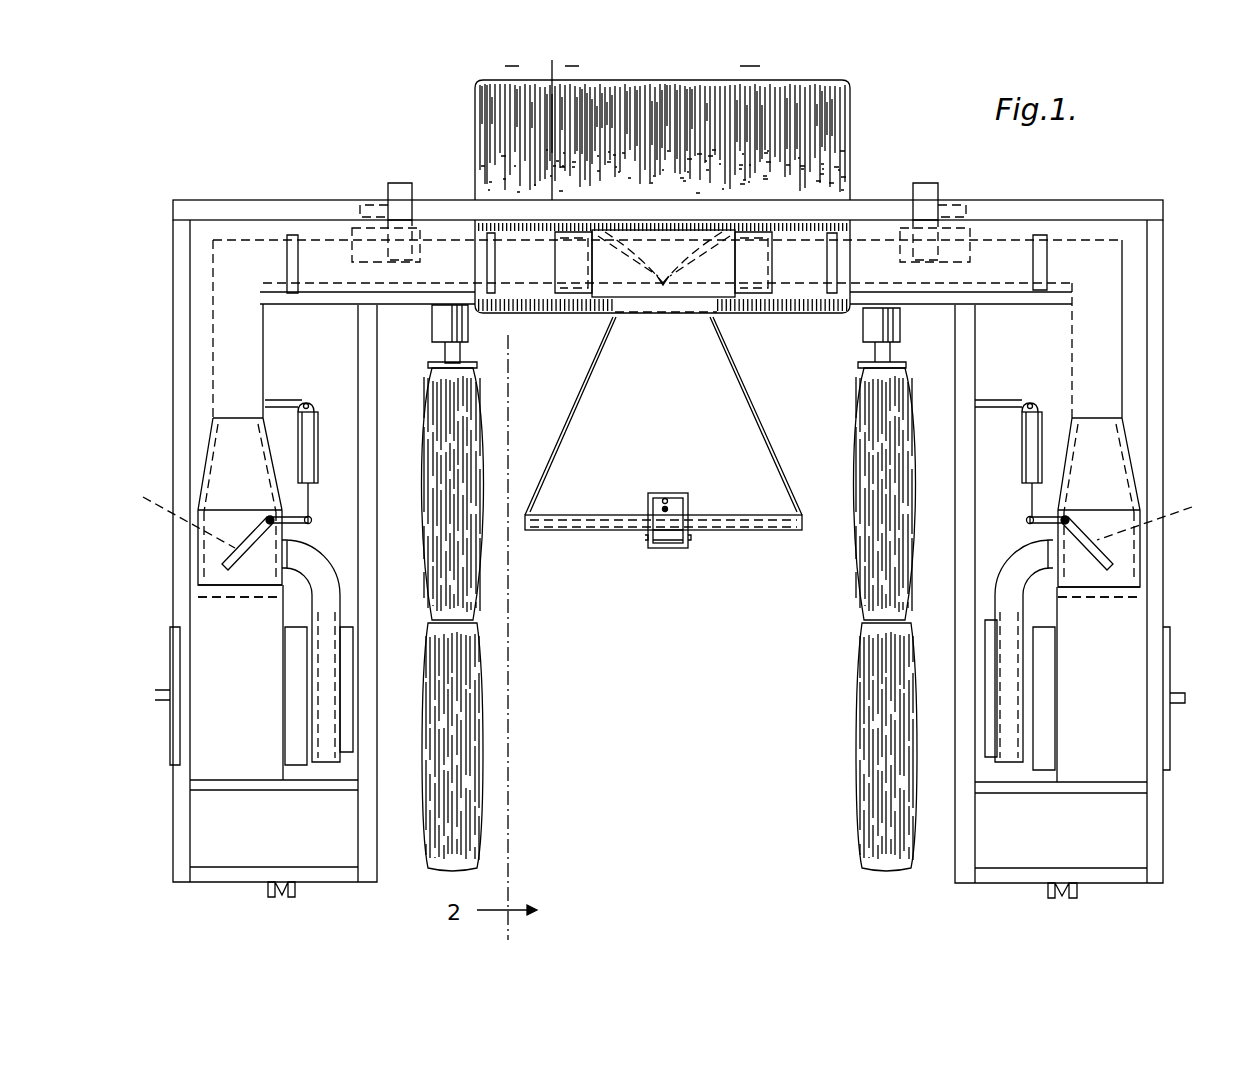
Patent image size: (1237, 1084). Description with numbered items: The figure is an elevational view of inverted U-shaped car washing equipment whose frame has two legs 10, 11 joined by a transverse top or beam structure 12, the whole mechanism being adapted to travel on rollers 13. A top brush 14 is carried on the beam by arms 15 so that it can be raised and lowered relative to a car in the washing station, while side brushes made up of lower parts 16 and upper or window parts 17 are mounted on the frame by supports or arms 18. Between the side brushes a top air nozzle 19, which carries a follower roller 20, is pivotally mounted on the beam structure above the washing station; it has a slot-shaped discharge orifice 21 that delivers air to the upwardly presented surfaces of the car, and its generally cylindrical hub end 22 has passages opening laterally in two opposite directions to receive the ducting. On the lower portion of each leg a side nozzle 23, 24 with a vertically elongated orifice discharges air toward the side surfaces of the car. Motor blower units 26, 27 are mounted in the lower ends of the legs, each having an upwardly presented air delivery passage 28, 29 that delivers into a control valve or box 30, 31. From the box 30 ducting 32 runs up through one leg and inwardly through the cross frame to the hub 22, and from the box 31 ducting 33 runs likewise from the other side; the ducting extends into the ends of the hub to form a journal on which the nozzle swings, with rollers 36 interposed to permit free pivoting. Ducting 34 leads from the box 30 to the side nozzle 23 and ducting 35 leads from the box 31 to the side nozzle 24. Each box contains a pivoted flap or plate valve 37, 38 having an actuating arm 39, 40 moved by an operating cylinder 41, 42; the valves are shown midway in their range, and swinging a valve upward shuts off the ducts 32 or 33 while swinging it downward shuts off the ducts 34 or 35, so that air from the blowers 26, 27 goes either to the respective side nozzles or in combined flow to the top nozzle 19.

The leg 10 is at (167, 401).
The leg 11 is at (1169, 461).
The beam structure 12 is at (261, 196).
The rollers 13 is at (283, 897).
The top brush 14 is at (825, 135).
The arms 15 is at (400, 183).
The lower parts of side brushes 16 is at (458, 710).
The upper or window parts of side brushes 17 is at (430, 420).
The supports or arms 18 is at (418, 303).
The top air nozzle 19 is at (595, 385).
The follower roller 20 is at (680, 548).
The discharge orifice 21 is at (568, 528).
The hub end 22 is at (715, 290).
The side nozzle 23 is at (353, 656).
The side nozzle 24 is at (985, 676).
The motor blower unit 26 is at (220, 707).
The motor blower unit 27 is at (1120, 667).
The air delivery passage 28 is at (215, 588).
The air delivery passage 29 is at (1130, 588).
The control valve or box 30 is at (210, 547).
The control valve or box 31 is at (1125, 548).
The ducting 32 is at (225, 313).
The ducting 33 is at (1105, 345).
The ducting 34 is at (315, 565).
The ducting 35 is at (1015, 565).
The rollers 36 is at (600, 236).
The flap or plate valve 37 is at (171, 517).
The flap or plate valve 38 is at (1158, 518).
The actuating arm 39 is at (308, 520).
The actuating arm 40 is at (1030, 517).
The operating cylinder 41 is at (312, 465).
The operating cylinder 42 is at (1022, 430).